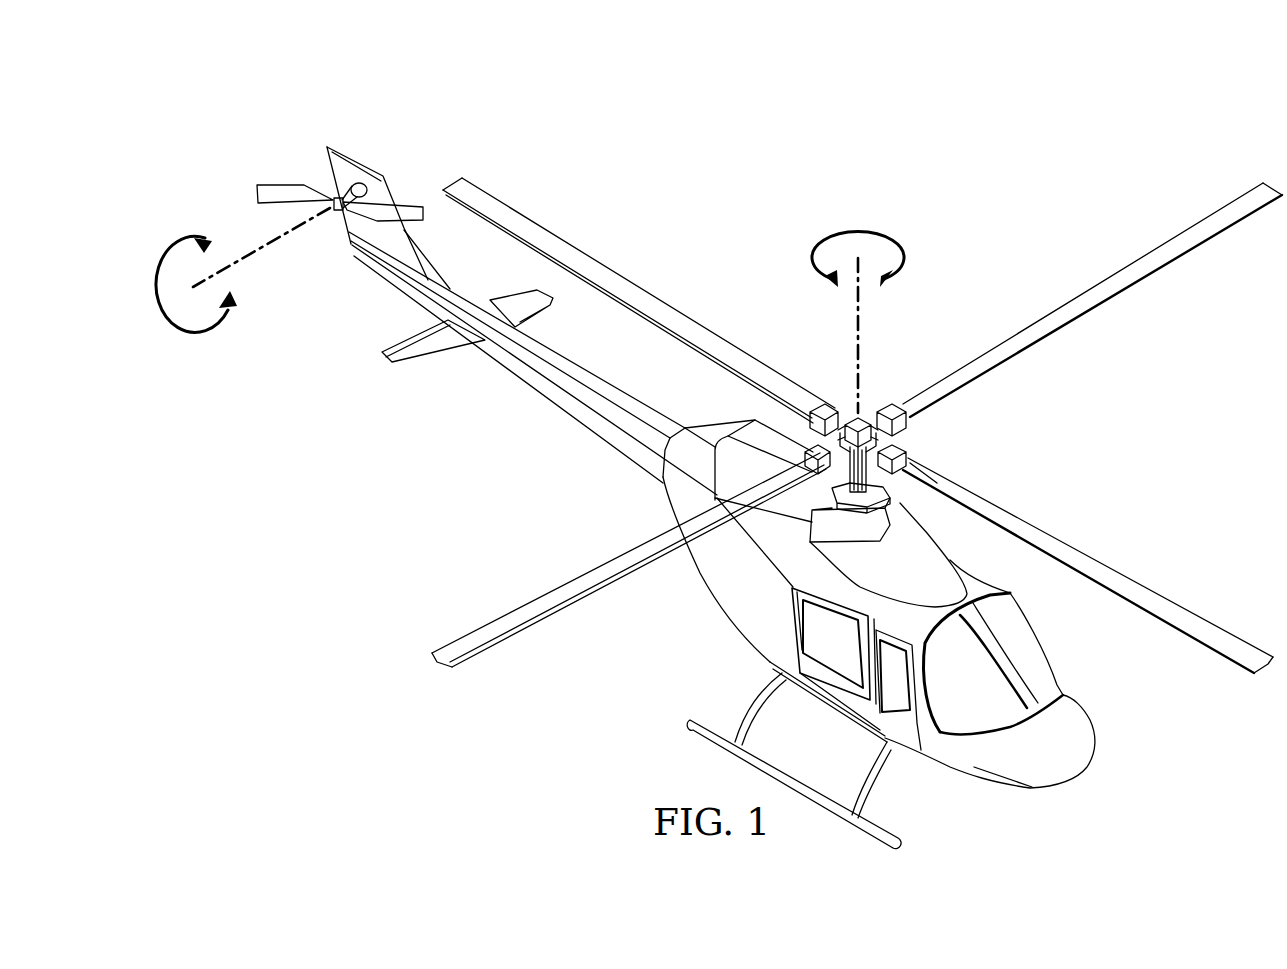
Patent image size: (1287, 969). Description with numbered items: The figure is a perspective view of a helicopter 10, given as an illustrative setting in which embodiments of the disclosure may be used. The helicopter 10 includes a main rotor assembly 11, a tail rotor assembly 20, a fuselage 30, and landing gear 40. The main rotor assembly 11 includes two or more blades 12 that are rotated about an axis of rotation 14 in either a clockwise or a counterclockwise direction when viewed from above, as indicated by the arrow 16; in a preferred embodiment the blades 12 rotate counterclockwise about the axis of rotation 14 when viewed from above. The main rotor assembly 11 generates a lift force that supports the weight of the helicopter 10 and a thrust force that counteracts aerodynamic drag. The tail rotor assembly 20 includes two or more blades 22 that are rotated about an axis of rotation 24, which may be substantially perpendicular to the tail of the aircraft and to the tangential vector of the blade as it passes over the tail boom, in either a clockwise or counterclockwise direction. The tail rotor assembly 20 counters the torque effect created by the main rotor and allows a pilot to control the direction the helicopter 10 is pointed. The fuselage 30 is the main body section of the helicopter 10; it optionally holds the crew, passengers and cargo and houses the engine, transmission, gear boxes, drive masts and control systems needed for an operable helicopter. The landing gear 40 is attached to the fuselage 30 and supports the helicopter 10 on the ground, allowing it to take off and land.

The helicopter 10 is at (816, 180).
The main rotor assembly 11 is at (822, 371).
The blades 12 is at (600, 261).
The axis of rotation 14 is at (861, 337).
The arrow 16 is at (814, 262).
The tail rotor assembly 20 is at (294, 103).
The blades 22 is at (282, 180).
The axis of rotation 24 is at (262, 253).
The fuselage 30 is at (1098, 737).
The landing gear 40 is at (887, 832).